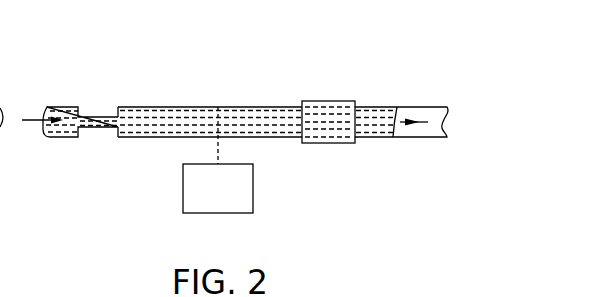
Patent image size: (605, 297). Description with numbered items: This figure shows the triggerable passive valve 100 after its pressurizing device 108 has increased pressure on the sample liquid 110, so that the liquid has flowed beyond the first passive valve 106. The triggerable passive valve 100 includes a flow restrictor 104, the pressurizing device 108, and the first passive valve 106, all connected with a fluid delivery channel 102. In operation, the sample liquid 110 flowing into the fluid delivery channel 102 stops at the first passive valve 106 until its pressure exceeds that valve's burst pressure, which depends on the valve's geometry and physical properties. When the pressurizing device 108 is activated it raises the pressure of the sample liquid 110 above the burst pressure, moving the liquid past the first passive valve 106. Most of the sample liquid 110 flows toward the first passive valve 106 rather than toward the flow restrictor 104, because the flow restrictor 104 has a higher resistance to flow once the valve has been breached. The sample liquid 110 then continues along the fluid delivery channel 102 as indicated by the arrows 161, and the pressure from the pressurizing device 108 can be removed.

The triggerable passive valve 100 is at (237, 80).
The fluid delivery channel 102 is at (148, 105).
The flow restrictor 104 is at (98, 116).
The first passive valve 106 is at (328, 143).
The pressurizing device 108 is at (183, 188).
The sample liquid 110 is at (185, 107).
The arrows 161 is at (35, 120).